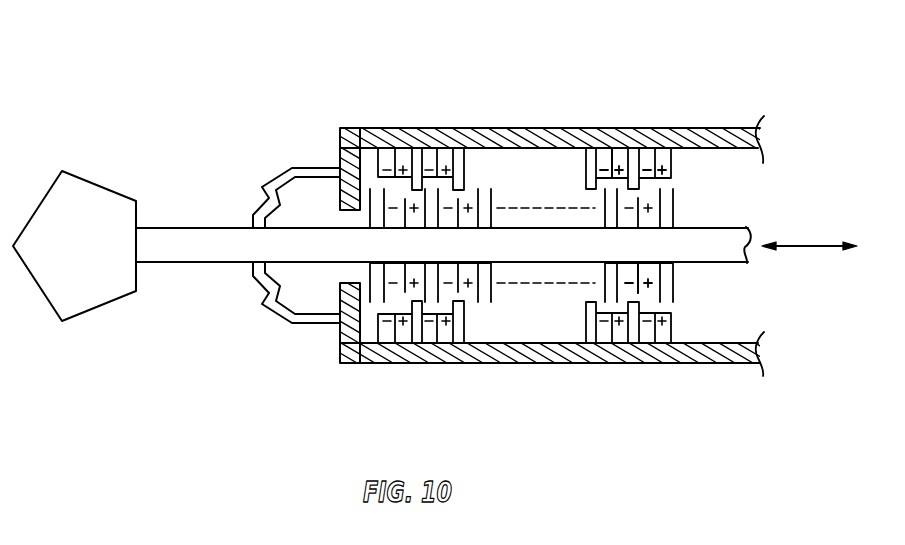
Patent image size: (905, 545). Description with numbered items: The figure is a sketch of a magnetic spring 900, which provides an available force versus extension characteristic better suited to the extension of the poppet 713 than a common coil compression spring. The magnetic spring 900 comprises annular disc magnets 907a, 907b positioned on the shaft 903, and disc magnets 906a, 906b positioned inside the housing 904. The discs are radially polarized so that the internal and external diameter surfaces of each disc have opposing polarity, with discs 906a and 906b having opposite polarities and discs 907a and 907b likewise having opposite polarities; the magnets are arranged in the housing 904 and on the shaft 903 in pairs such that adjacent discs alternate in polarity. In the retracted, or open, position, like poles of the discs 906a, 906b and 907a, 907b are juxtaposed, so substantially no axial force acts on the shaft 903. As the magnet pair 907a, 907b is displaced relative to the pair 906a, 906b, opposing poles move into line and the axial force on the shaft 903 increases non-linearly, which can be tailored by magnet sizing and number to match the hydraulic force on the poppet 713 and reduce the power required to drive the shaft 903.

The magnetic spring 900 is at (153, 61).
The poppet 713 is at (100, 179).
The shaft 903 is at (228, 228).
The housing 904 is at (478, 363).
The disc magnet 906a is at (603, 150).
The disc magnet 906b is at (620, 150).
The annular disc magnet 907a is at (627, 268).
The annular disc magnet 907b is at (653, 268).